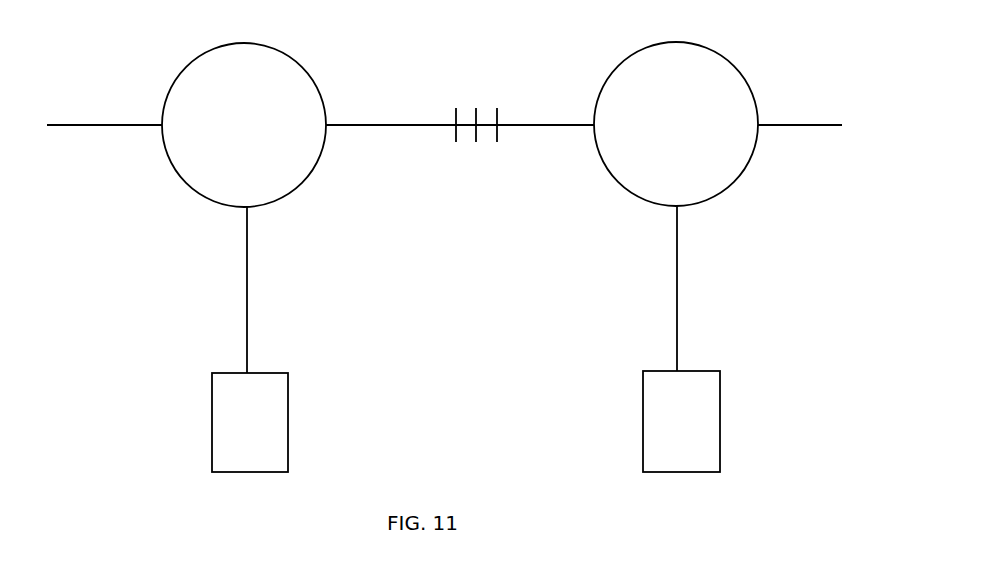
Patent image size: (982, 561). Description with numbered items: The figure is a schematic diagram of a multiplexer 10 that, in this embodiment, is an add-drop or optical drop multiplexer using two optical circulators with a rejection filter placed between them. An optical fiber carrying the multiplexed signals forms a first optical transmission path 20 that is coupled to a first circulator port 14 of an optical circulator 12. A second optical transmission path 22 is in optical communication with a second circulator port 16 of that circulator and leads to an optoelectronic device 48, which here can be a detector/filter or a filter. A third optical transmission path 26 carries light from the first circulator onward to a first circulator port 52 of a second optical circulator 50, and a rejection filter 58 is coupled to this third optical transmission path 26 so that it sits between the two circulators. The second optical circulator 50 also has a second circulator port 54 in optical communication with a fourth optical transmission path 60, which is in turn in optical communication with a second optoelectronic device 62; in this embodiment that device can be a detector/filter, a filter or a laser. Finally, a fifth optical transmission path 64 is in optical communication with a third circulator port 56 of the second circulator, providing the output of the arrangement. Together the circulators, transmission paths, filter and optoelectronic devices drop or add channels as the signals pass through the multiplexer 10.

The multiplexer 10 is at (445, 400).
The optical circulator 12 is at (292, 57).
The first circulator port 14 is at (162, 120).
The second circulator port 16 is at (247, 213).
The first optical transmission path 20 is at (73, 125).
The second optical transmission path 22 is at (247, 272).
The third optical transmission path 26 is at (367, 125).
The optoelectronic device 48 is at (223, 410).
The second optical circulator 50 is at (723, 192).
The first circulator port 52 is at (593, 123).
The second circulator port 54 is at (677, 213).
The third circulator port 56 is at (760, 123).
The rejection filter 58 is at (470, 117).
The fourth optical transmission path 60 is at (677, 272).
The second optoelectronic device 62 is at (653, 408).
The fifth optical transmission path 64 is at (805, 125).